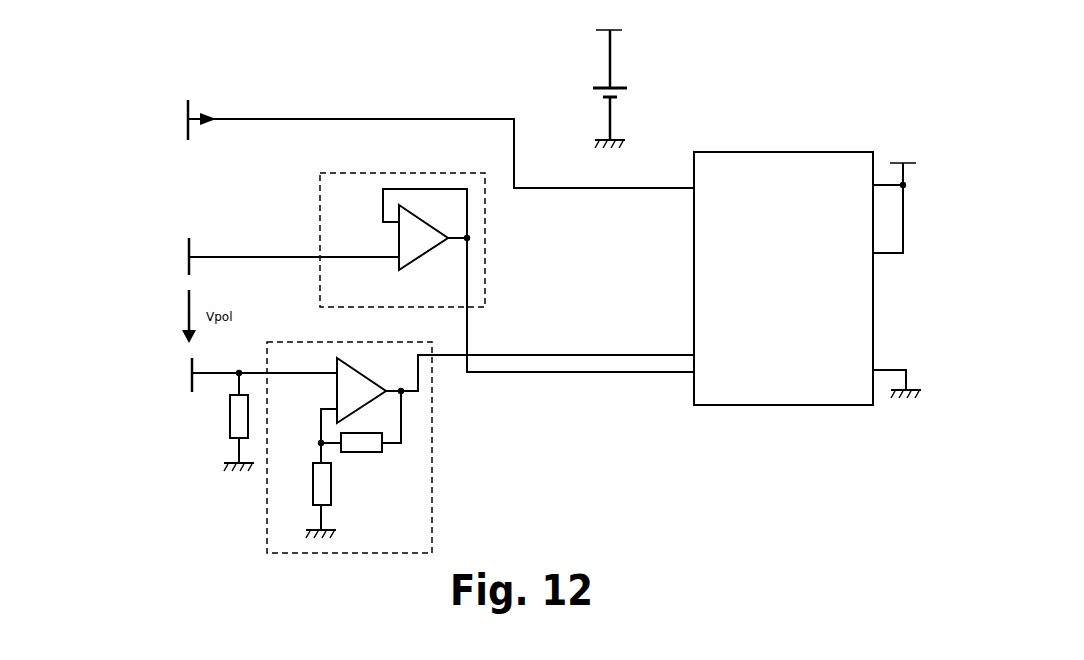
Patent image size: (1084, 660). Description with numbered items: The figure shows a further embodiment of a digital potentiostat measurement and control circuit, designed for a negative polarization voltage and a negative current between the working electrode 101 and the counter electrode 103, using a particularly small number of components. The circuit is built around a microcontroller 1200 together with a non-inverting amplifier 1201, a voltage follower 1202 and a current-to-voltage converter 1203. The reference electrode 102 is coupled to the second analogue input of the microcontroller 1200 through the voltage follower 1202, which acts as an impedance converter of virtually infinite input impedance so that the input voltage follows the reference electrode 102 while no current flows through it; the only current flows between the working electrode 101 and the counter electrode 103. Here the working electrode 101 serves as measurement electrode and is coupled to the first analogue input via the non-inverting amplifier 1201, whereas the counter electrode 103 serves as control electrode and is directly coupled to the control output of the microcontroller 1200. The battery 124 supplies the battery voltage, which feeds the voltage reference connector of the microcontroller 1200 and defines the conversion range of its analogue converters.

The working electrode 101 is at (175, 398).
The reference electrode 102 is at (177, 233).
The counter electrode 103 is at (176, 100).
The battery 124 is at (643, 73).
The microcontroller 1200 is at (778, 382).
The non-inverting amplifier 1201 is at (287, 518).
The voltage follower 1202 is at (340, 212).
The current-to-voltage converter 1203 is at (213, 437).